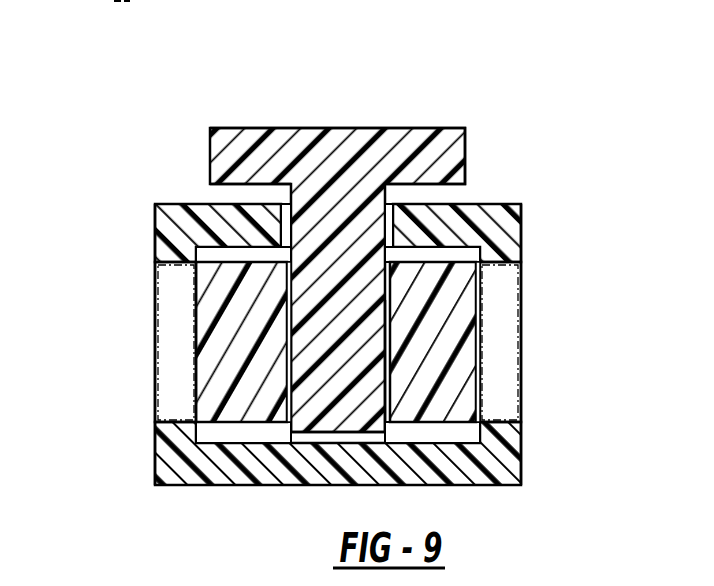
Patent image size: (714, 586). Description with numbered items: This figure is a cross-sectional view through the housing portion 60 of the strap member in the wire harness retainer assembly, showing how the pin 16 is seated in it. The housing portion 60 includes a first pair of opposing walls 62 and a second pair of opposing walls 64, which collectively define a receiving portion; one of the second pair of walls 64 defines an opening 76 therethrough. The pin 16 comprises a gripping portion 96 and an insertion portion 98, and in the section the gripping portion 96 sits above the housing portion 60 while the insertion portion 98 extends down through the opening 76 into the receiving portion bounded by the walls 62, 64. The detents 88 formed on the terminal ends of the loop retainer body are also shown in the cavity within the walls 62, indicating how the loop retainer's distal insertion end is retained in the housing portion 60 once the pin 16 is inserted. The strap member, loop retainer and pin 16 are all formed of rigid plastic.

The pin 16 is at (411, 236).
The gripping portion 96 is at (253, 137).
The insertion portion 98 is at (347, 353).
The second pair of opposing walls 64 is at (207, 218).
The housing portion 60 is at (472, 212).
The first pair of opposing walls 62 is at (505, 245).
The opening 76 is at (412, 228).
The detents 88 is at (178, 338).